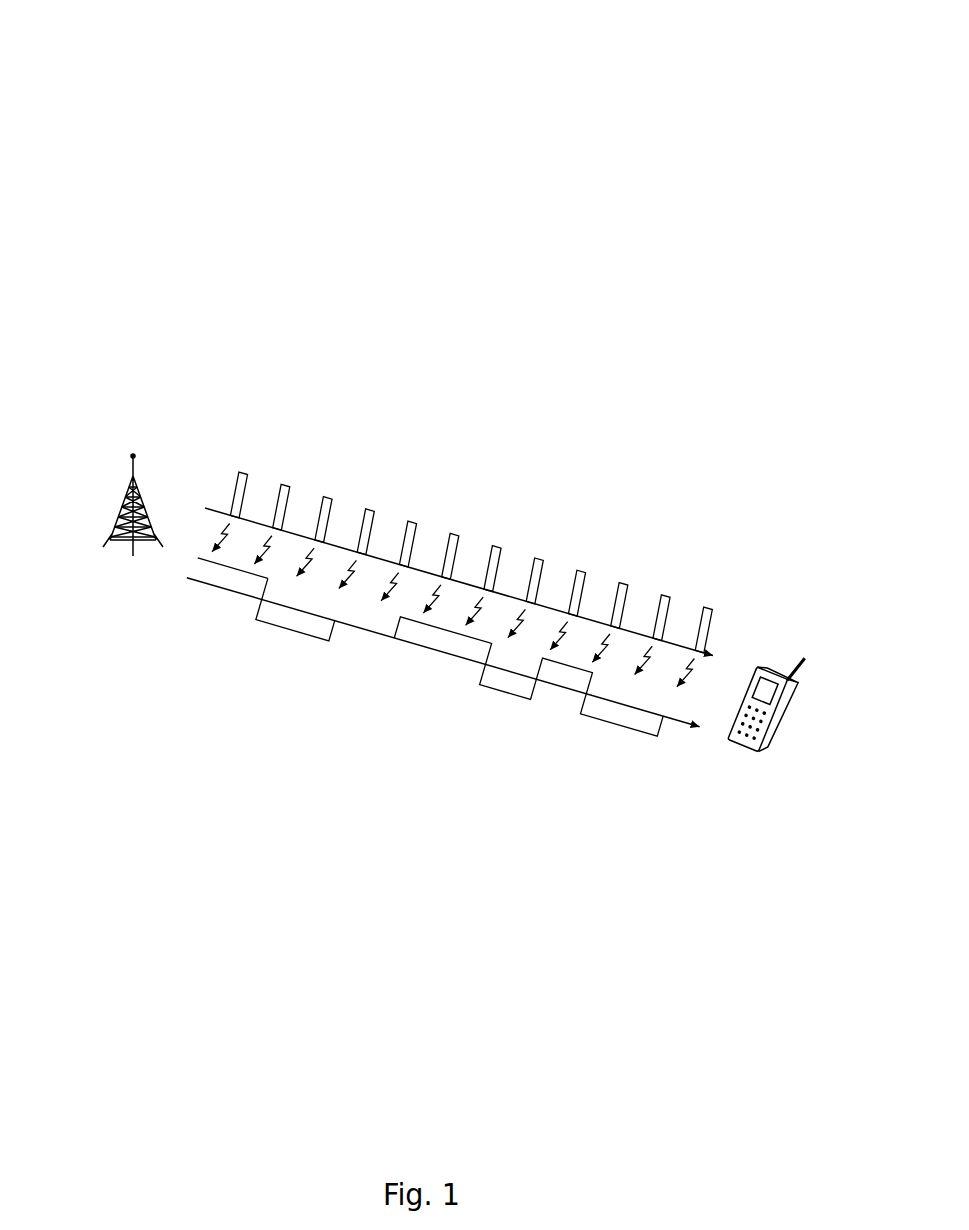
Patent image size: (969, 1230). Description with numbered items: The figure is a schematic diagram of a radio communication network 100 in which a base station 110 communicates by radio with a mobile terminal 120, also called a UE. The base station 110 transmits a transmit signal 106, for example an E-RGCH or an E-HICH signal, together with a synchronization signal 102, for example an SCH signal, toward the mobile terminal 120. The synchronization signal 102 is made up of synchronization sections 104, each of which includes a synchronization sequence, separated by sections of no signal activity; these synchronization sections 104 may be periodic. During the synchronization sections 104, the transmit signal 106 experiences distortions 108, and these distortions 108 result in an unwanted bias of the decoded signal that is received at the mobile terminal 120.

The radio communication network 100 is at (350, 108).
The synchronization signal 102 is at (357, 435).
The synchronization sections 104 is at (534, 581).
The transmit signal 106 is at (313, 703).
The distortions 108 is at (517, 642).
The base station 110 is at (130, 427).
The mobile terminal 120 is at (778, 612).